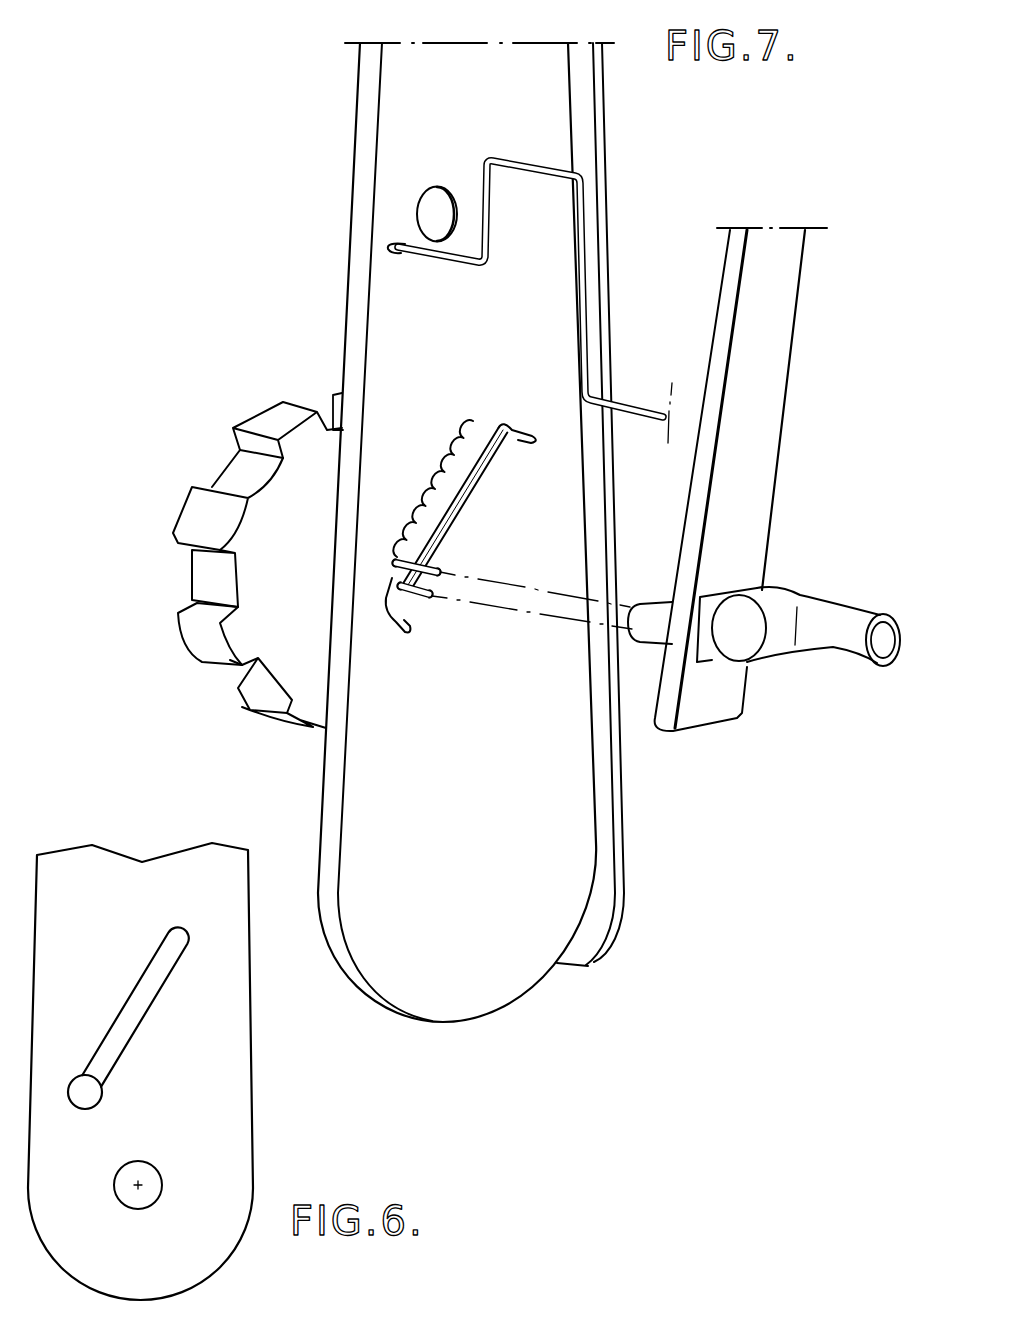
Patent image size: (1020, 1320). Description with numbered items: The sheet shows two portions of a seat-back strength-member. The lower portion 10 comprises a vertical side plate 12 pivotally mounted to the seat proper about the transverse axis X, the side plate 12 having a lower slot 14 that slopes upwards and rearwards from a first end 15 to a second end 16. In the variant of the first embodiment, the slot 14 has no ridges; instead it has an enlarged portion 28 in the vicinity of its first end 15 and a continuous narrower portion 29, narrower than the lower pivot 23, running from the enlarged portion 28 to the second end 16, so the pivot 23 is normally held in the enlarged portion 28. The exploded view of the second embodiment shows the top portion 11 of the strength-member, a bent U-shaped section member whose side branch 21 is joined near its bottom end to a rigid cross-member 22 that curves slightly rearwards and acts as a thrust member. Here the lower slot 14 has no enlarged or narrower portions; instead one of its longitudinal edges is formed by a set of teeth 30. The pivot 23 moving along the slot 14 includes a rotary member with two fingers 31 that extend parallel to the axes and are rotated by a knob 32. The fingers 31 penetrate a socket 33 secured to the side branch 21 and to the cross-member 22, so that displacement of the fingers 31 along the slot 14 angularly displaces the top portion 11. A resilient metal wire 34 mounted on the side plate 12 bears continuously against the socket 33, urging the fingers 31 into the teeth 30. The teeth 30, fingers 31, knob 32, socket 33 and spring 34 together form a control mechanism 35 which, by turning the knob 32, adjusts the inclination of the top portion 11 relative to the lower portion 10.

In FIG. 7, the lower portion of the seat-back strength-member 10 is at (454, 532).
In FIG. 7, the top portion of the seat-back strength-member 11 is at (764, 479).
In FIG. 7, the side plate 12 is at (533, 97).
In FIG. 6, the side plate 12 is at (200, 873).
In FIG. 7, the lower slot 14 is at (452, 516).
In FIG. 6, the lower slot 14 is at (116, 986).
In FIG. 7, the first end of the slot 15 is at (389, 602).
In FIG. 6, the first end of the slot 15 is at (73, 1105).
In FIG. 7, the second end of the slot 16 is at (512, 425).
In FIG. 6, the second end of the slot 16 is at (175, 928).
In FIG. 7, the side branch 21 is at (752, 397).
In FIG. 7, the cross-member 22 is at (855, 640).
In FIG. 7, the lower pivot 23 is at (433, 600).
In FIG. 6, the lower pivot 23 is at (88, 1098).
In FIG. 6, the enlarged portion of the slot 28 is at (102, 1100).
In FIG. 6, the narrower portion of the slot 29 is at (143, 1025).
In FIG. 7, the set of teeth 30 is at (433, 462).
In FIG. 7, the finger 31 is at (392, 582).
In FIG. 7, the knob 32 is at (273, 415).
In FIG. 7, the socket 33 is at (655, 612).
In FIG. 7, the resilient metal wire 34 is at (462, 486).
In FIG. 7, the control mechanism 35 is at (247, 539).